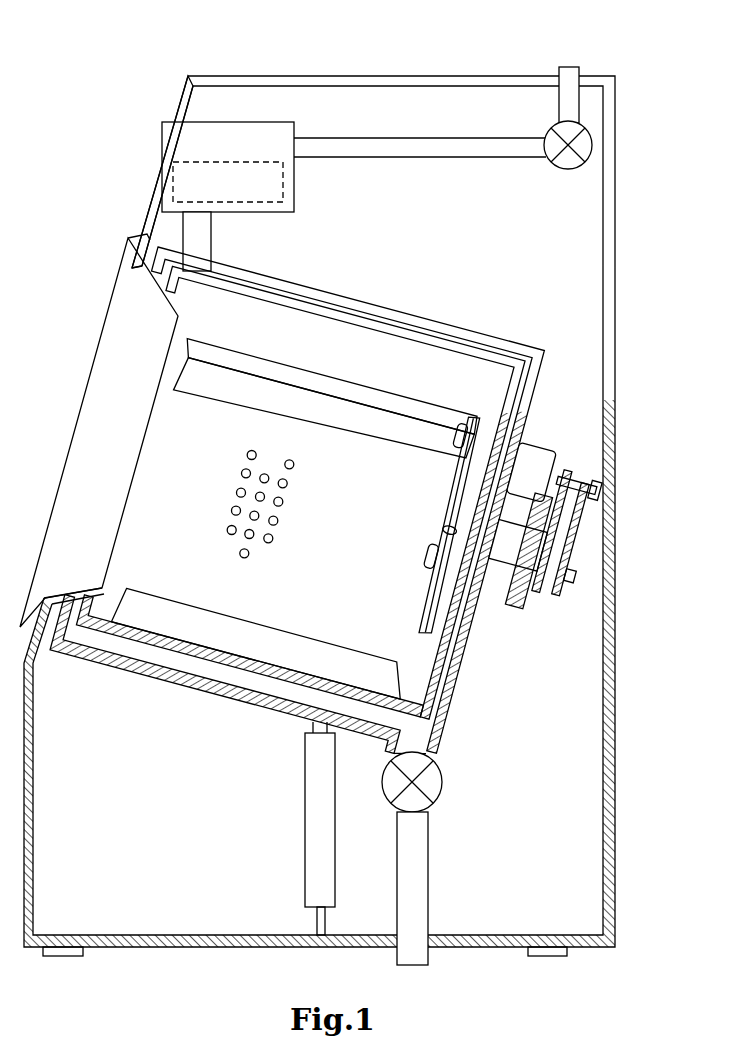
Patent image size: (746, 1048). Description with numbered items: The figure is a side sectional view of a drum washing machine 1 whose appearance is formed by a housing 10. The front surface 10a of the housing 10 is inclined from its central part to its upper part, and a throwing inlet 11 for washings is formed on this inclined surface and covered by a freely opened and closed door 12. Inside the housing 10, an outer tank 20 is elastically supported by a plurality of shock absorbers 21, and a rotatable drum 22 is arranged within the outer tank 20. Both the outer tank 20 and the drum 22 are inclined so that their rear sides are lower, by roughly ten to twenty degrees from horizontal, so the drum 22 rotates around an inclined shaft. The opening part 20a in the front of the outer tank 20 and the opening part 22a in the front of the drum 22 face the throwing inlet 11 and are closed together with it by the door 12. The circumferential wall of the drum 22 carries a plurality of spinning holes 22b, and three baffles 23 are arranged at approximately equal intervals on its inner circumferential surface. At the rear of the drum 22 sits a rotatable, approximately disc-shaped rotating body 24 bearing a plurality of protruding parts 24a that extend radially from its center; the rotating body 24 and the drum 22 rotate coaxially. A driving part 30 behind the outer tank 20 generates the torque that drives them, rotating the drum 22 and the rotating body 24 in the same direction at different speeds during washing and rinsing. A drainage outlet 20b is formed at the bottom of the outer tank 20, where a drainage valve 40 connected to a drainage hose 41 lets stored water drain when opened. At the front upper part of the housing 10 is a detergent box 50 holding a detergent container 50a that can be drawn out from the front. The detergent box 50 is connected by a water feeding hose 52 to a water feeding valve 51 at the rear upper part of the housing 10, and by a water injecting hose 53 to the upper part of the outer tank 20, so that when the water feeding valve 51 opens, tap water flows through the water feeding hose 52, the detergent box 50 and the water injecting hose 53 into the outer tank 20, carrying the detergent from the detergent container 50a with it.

The drum washing machine 1 is at (638, 90).
The housing 10 is at (226, 75).
The front surface 10a is at (156, 194).
The throwing inlet 11 is at (130, 248).
The door 12 is at (100, 380).
The outer tank 20 is at (452, 322).
The opening part 20a is at (158, 318).
The drainage outlet 20b is at (418, 742).
The shock absorbers 21 is at (305, 806).
The drum 22 is at (375, 304).
The opening part 22a is at (185, 322).
The spinning holes 22b is at (232, 497).
The baffles 23 is at (380, 446).
The rotating body 24 is at (450, 532).
The protruding parts 24a is at (463, 430).
The driving part 30 is at (553, 605).
The drainage valve 40 is at (442, 782).
The drainage hose 41 is at (428, 862).
The detergent box 50 is at (262, 122).
The detergent container 50a is at (220, 162).
The water feeding valve 51 is at (560, 168).
The water feeding hose 52 is at (418, 138).
The water injecting hose 53 is at (212, 233).